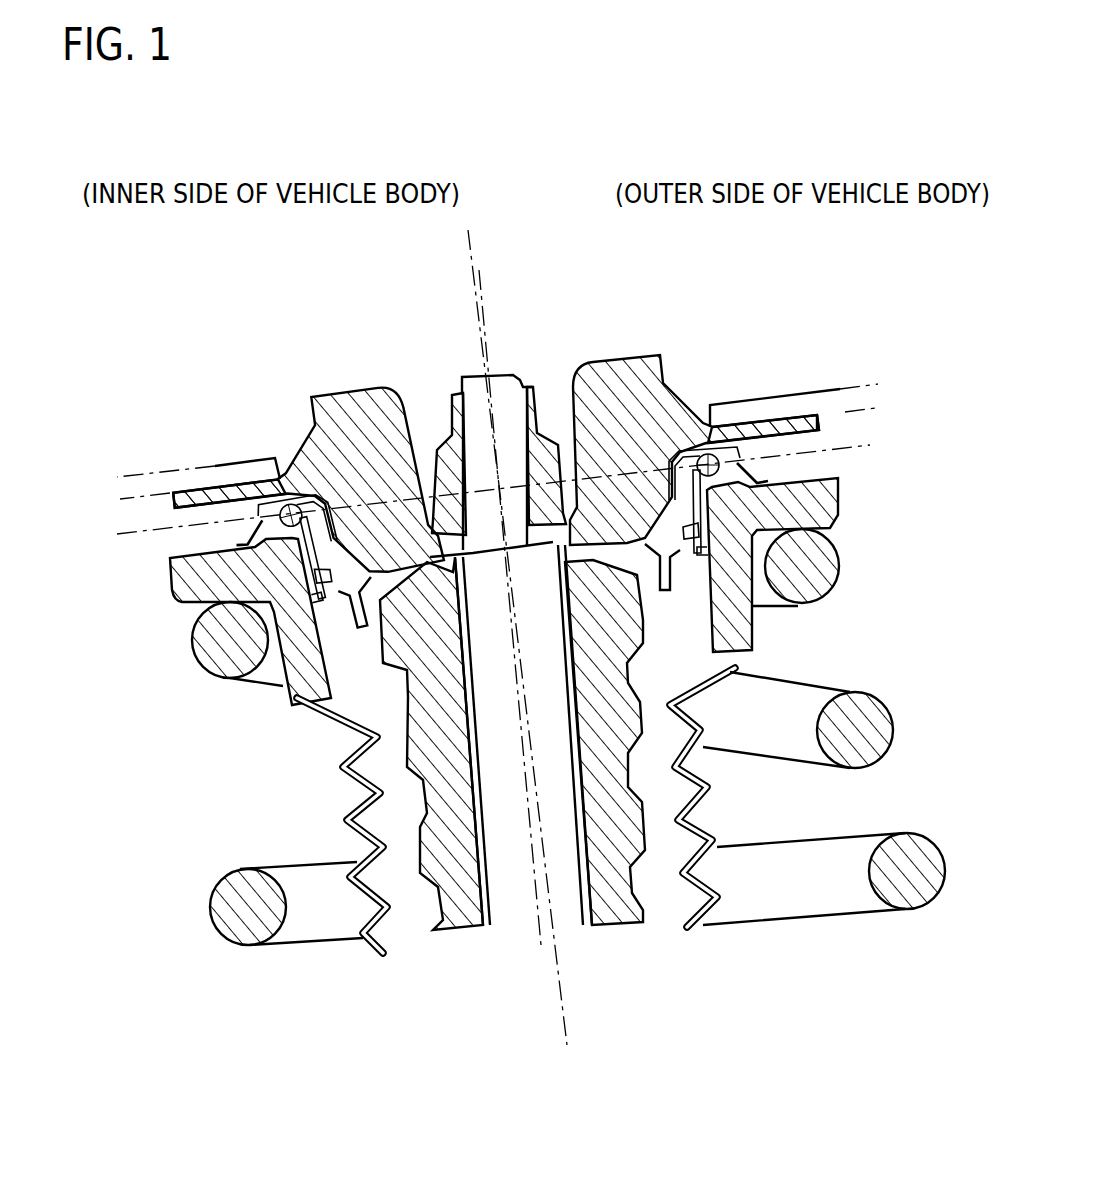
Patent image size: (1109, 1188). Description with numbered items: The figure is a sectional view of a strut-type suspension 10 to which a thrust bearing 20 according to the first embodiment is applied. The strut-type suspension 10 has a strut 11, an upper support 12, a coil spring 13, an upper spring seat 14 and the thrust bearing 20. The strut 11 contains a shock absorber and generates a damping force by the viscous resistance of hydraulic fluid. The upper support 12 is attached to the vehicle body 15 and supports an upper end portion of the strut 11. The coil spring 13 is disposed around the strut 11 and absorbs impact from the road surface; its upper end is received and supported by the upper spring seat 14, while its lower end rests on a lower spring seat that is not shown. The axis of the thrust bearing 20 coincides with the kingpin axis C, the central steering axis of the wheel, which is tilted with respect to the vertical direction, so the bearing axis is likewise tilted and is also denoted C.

The strut-type suspension 10 is at (743, 321).
The strut 11 is at (498, 793).
The upper support 12 is at (634, 356).
The coil spring 13 is at (872, 704).
The upper spring seat 14 is at (801, 482).
The vehicle body 15 is at (840, 388).
The thrust bearing 20 is at (503, 501).
The kingpin axis C is at (562, 1010).